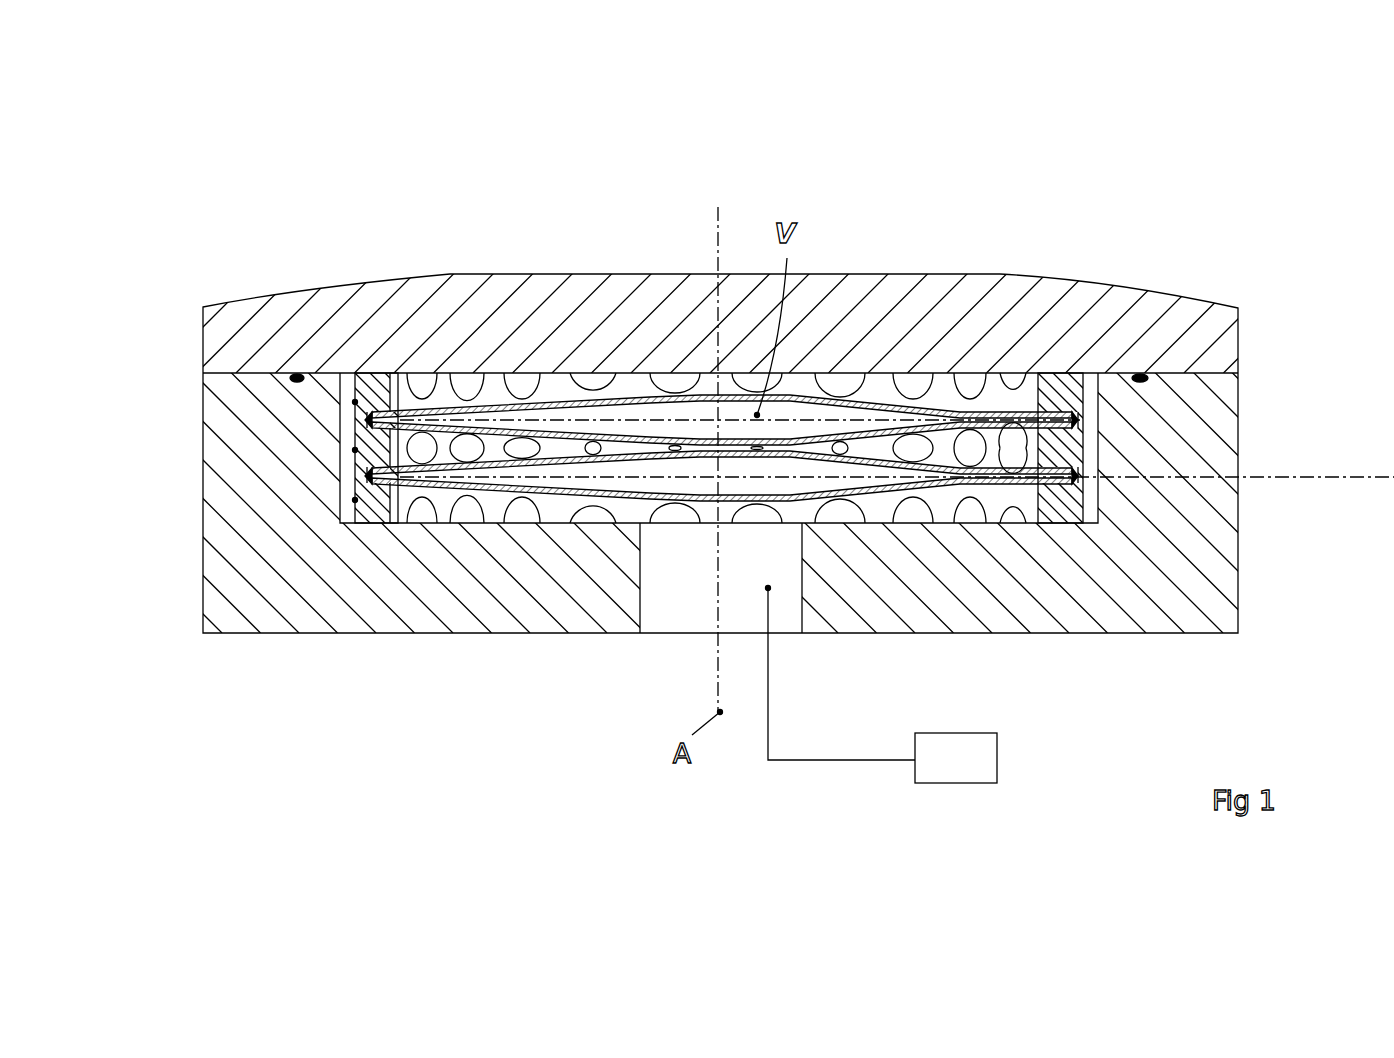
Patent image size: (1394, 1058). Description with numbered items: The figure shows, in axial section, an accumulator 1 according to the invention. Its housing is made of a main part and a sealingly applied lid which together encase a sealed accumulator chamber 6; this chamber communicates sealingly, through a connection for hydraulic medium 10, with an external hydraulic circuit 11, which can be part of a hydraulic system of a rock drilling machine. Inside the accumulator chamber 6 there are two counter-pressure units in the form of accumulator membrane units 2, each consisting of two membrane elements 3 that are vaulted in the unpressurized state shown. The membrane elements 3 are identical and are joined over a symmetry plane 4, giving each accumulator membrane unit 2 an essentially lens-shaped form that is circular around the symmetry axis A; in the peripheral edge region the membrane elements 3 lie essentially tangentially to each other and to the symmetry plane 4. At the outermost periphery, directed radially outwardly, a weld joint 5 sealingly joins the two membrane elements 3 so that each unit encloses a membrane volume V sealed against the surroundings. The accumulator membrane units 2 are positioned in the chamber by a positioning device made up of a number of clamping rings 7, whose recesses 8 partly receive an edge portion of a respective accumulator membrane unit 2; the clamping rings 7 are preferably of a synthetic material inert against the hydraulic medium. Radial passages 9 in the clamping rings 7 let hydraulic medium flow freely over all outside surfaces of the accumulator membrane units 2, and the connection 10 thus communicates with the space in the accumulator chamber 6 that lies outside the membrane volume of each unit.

The accumulator 1 is at (724, 173).
The accumulator membrane unit 2 is at (793, 412).
The membrane element 3 is at (588, 492).
The symmetry plane 4 is at (1332, 477).
The weld joint 5 is at (368, 480).
The accumulator chamber 6 is at (346, 392).
The clamping ring 7 is at (355, 500).
The recess 8 is at (388, 410).
The radial passage 9 is at (675, 383).
The connection for hydraulic medium 10 is at (833, 760).
The external hydraulic circuit 11 is at (956, 758).